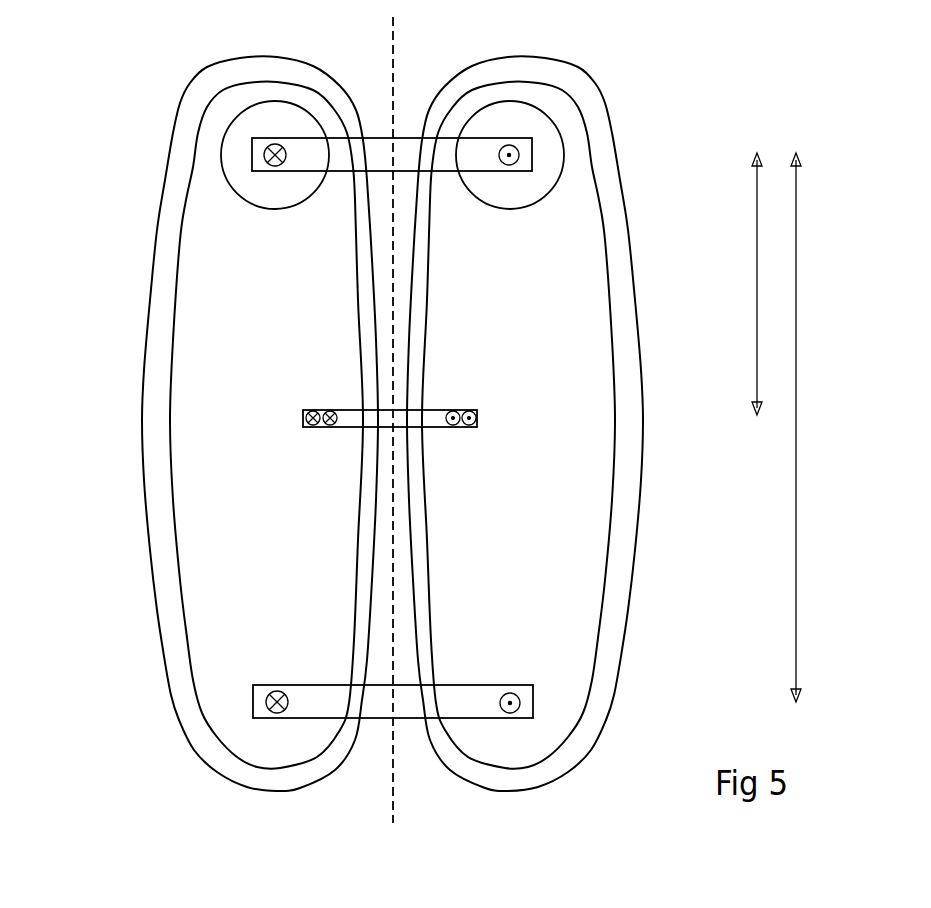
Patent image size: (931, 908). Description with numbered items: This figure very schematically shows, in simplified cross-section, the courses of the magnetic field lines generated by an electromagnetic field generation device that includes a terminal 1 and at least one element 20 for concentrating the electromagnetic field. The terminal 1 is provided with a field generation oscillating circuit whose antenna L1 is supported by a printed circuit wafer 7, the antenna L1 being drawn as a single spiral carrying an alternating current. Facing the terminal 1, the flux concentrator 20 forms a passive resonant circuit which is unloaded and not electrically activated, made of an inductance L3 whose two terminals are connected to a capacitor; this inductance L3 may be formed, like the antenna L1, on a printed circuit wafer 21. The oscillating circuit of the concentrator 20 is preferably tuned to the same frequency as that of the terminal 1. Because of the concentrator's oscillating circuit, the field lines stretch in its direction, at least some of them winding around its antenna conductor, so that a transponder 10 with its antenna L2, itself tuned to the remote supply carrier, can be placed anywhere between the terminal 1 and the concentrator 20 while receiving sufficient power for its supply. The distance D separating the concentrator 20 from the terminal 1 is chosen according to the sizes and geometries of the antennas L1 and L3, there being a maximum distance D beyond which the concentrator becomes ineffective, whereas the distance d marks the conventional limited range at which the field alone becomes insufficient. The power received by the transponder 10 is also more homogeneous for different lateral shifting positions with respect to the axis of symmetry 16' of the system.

The terminal 1 is at (154, 151).
The printed circuit wafer 7 is at (378, 137).
The axis of symmetry 16' is at (456, 414).
The element for concentrating the electromagnetic field 20 is at (141, 702).
The printed circuit wafer 21 is at (381, 720).
The transponder 10 is at (330, 428).
The antenna L1 is at (520, 160).
The antenna L2 is at (462, 410).
The inductance L3 is at (503, 698).
The distance d is at (757, 307).
The distance D is at (796, 520).